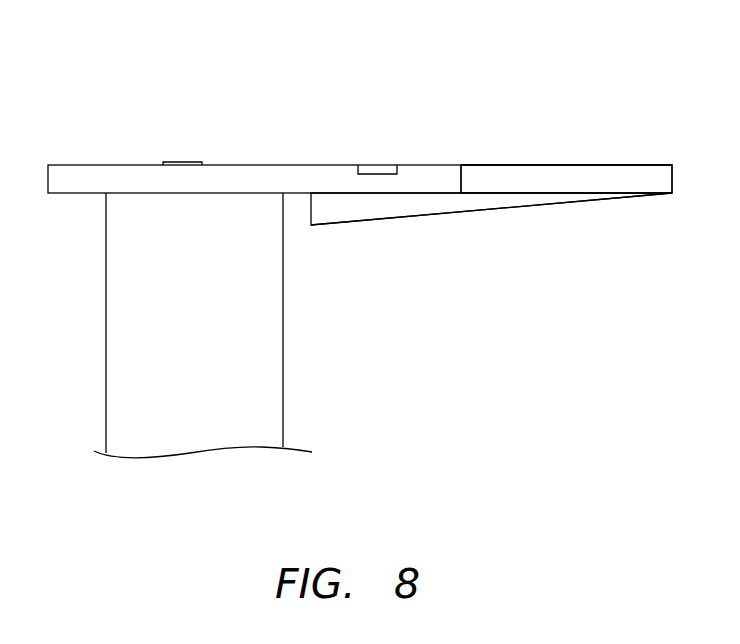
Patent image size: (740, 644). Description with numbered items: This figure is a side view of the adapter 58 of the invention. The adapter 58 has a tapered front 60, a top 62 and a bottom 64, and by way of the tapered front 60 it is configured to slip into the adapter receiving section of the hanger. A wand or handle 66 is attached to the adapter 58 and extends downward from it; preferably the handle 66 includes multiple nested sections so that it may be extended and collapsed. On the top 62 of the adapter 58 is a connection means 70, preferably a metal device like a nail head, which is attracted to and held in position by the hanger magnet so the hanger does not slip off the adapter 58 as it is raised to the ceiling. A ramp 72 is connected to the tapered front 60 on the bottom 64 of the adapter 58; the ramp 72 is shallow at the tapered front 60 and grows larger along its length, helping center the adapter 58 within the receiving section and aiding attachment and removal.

The adapter 58 is at (281, 120).
The tapered front 60 is at (615, 146).
The top 62 is at (500, 165).
The bottom 64 is at (614, 214).
The handle 66 is at (136, 354).
The connection means 70 is at (385, 165).
The ramp 72 is at (500, 200).